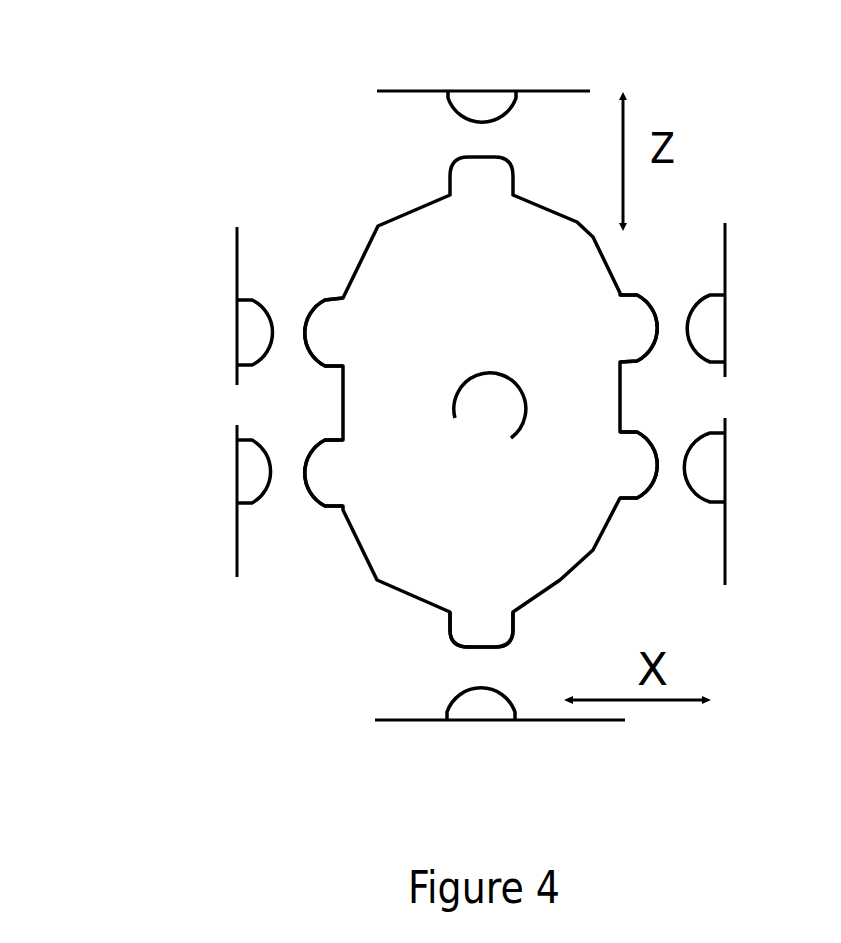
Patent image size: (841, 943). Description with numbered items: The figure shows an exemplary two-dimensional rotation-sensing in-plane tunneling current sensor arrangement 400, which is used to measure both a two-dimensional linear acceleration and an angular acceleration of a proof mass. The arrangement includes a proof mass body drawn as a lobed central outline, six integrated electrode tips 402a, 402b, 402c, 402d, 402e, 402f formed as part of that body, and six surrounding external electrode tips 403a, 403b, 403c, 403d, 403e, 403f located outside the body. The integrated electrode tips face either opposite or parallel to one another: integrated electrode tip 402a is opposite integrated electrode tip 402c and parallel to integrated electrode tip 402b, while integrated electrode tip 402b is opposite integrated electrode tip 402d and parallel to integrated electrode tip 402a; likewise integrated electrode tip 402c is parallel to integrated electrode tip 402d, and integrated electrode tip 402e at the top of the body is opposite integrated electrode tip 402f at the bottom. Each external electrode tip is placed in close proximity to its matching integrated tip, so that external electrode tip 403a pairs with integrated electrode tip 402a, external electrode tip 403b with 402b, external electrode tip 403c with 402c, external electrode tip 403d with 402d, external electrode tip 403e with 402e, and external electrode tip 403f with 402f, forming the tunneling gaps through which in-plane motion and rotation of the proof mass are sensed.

The two-dimensional rotation-sensing in-plane tunneling current sensor arrangement 400 is at (198, 103).
The integrated electrode tip 402a is at (635, 358).
The integrated electrode tip 402b is at (633, 497).
The integrated electrode tip 402c is at (323, 300).
The integrated electrode tip 402d is at (318, 447).
The integrated electrode tip 402e is at (514, 175).
The integrated electrode tip 402f is at (449, 623).
The external electrode tip 403a is at (713, 290).
The external electrode tip 403b is at (712, 428).
The external electrode tip 403c is at (235, 375).
The external electrode tip 403d is at (235, 512).
The external electrode tip 403e is at (438, 90).
The external electrode tip 403f is at (523, 715).